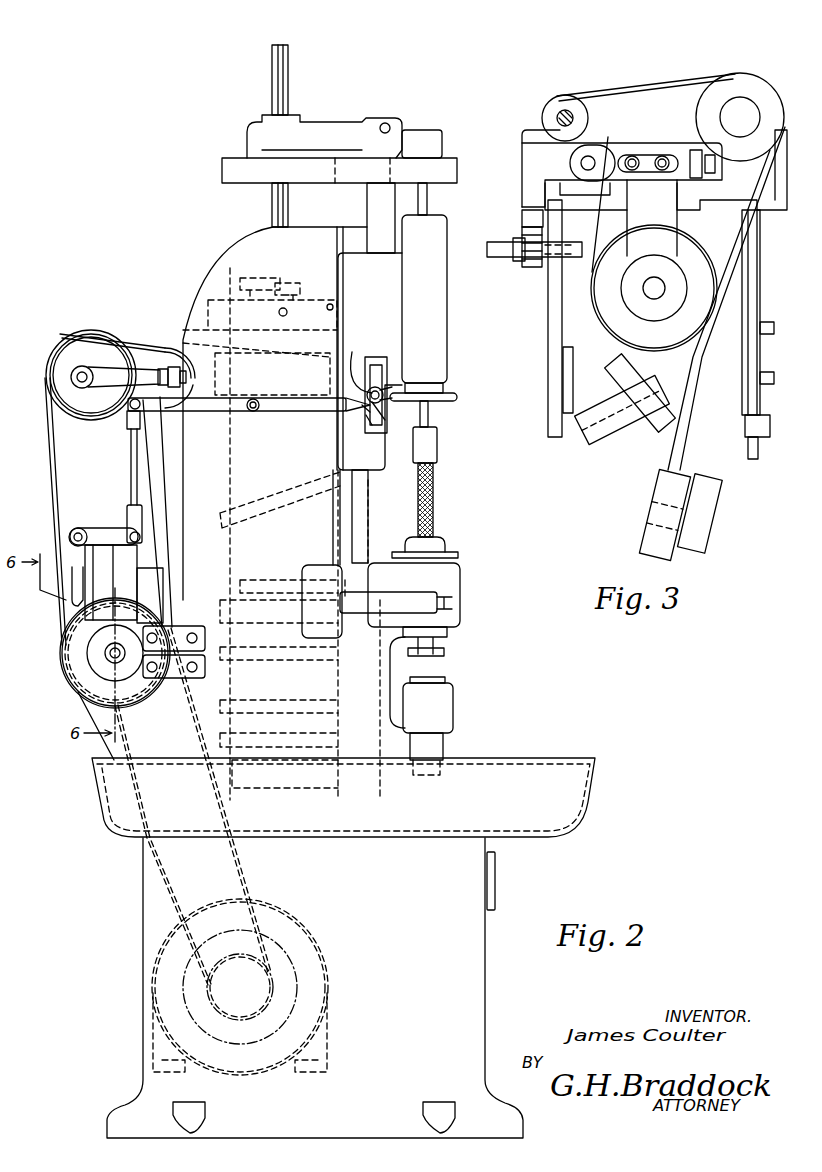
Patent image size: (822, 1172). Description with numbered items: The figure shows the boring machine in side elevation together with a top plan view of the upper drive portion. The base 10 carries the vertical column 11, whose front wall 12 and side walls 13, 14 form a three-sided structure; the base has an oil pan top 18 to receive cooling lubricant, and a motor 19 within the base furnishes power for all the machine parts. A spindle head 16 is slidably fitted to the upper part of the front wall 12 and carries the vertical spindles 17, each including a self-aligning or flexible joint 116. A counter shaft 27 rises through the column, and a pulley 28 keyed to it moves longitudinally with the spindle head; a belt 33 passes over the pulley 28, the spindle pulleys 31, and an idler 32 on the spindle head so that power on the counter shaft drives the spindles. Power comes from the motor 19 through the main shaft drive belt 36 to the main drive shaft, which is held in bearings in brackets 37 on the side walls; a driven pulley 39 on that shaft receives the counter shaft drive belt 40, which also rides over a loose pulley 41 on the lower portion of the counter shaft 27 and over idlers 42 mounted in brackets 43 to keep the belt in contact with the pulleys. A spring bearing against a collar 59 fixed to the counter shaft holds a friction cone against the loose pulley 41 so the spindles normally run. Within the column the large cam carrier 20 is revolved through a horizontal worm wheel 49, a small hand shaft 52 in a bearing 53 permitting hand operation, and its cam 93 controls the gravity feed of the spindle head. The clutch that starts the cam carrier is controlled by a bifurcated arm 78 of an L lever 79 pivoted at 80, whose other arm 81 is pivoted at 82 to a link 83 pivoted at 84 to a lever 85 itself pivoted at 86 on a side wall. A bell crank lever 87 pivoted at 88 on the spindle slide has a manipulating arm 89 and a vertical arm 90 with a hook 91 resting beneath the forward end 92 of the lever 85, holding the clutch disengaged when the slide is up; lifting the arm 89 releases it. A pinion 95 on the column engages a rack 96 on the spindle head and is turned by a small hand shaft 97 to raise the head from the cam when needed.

In FIG. 2, the base 10 is at (455, 998).
In FIG. 2, the vertical column 11 is at (252, 255).
In FIG. 2, the front wall 12 is at (368, 516).
In FIG. 3, the front wall 12 is at (712, 196).
In FIG. 3, the side wall 13 is at (548, 323).
In FIG. 3, the side wall 14 is at (758, 262).
In FIG. 2, the spindle head 16 is at (385, 312).
In FIG. 2, the vertical spindles 17 is at (430, 414).
In FIG. 2, the oil pan top 18 is at (500, 777).
In FIG. 2, the motor 19 is at (250, 975).
In FIG. 2, the cam carrier 20 is at (250, 545).
In FIG. 2, the counter shaft 27 is at (272, 200).
In FIG. 3, the pulley 28 is at (693, 262).
In FIG. 3, the pulleys 31 is at (567, 110).
In FIG. 3, the idler 32 is at (580, 163).
In FIG. 3, the belt 33 is at (680, 79).
In FIG. 2, the main shaft drive belt 36 is at (85, 712).
In FIG. 2, the brackets 37 is at (183, 635).
In FIG. 2, the driven pulley 39 is at (75, 655).
In FIG. 2, the counter shaft drive belt 40 is at (50, 488).
In FIG. 3, the counter shaft drive belt 40 is at (695, 393).
In FIG. 2, the loose pulley 41 is at (250, 305).
In FIG. 2, the idlers 42 is at (95, 350).
In FIG. 3, the idlers 42 is at (630, 436).
In FIG. 3, the brackets 43 is at (572, 406).
In FIG. 2, the horizontal worm wheel 49 is at (226, 596).
In FIG. 2, the small hand shaft 52 is at (452, 601).
In FIG. 2, the bearing 53 is at (445, 617).
In FIG. 2, the collar 59 is at (282, 294).
In FIG. 2, the bifurcated arm 78 is at (80, 562).
In FIG. 2, the L lever 79 is at (88, 530).
In FIG. 2, the pivot 80 is at (78, 528).
In FIG. 2, the arm 81 is at (122, 533).
In FIG. 2, the pivot 82 is at (136, 547).
In FIG. 2, the link 83 is at (131, 466).
In FIG. 2, the pivot 84 is at (130, 410).
In FIG. 2, the lever 85 is at (195, 411).
In FIG. 2, the pivot 86 is at (255, 411).
In FIG. 2, the bell crank lever 87 is at (383, 386).
In FIG. 2, the pivot 88 is at (360, 365).
In FIG. 2, the manipulating arm 89 is at (455, 394).
In FIG. 2, the vertical arm 90 is at (383, 411).
In FIG. 2, the hook 91 is at (372, 419).
In FIG. 2, the forward end 92 is at (368, 406).
In FIG. 2, the cam 93 is at (232, 512).
In FIG. 3, the pinion 95 is at (530, 262).
In FIG. 3, the rack 96 is at (528, 222).
In FIG. 3, the small hand shaft 97 is at (496, 256).
In FIG. 2, the flexible joint 116 is at (437, 446).